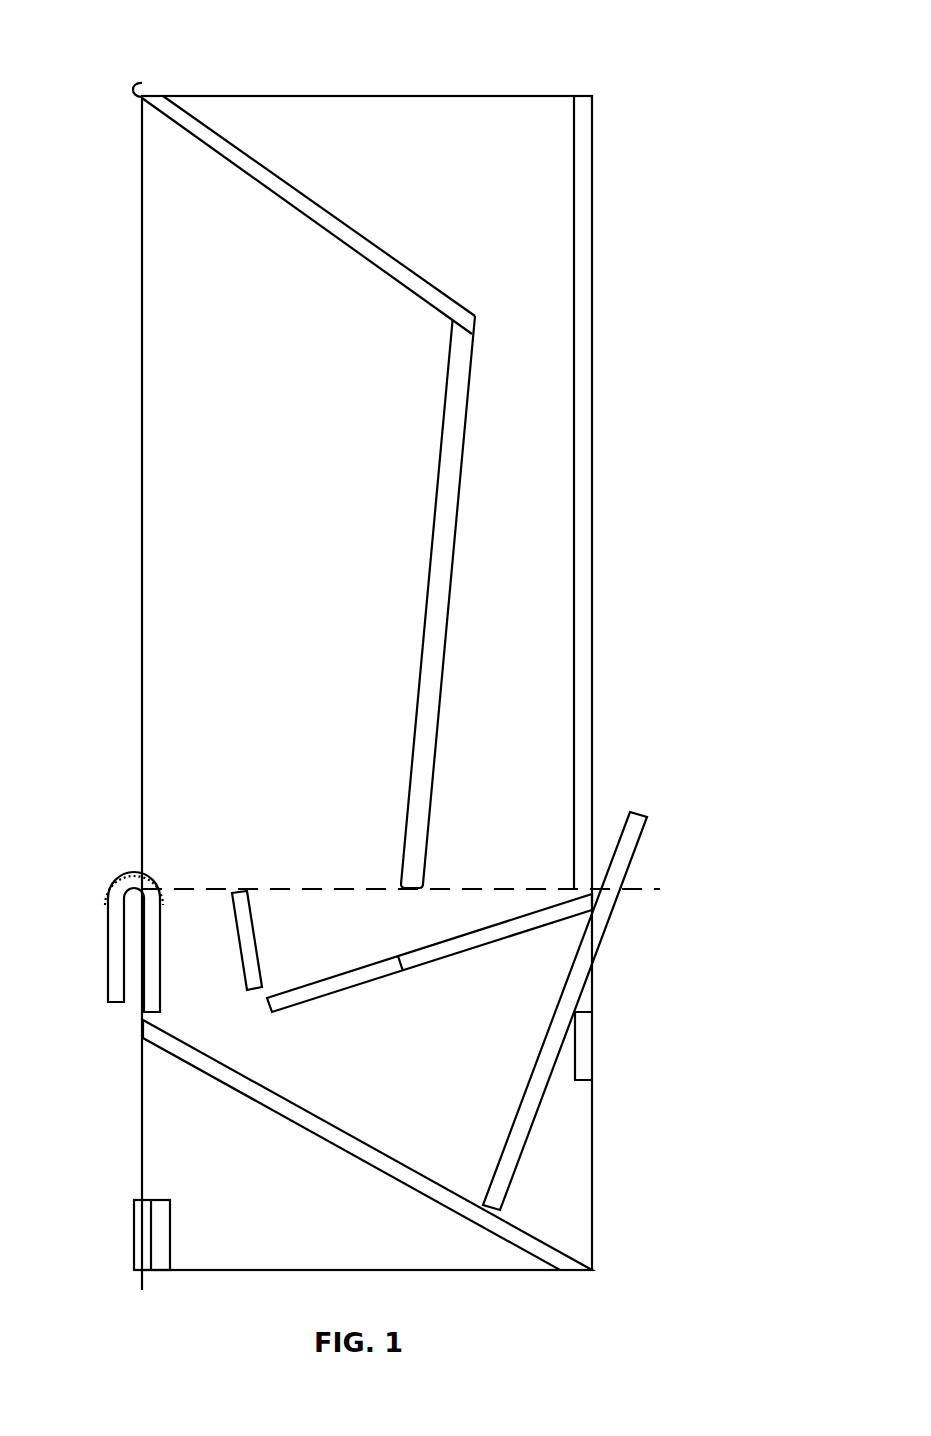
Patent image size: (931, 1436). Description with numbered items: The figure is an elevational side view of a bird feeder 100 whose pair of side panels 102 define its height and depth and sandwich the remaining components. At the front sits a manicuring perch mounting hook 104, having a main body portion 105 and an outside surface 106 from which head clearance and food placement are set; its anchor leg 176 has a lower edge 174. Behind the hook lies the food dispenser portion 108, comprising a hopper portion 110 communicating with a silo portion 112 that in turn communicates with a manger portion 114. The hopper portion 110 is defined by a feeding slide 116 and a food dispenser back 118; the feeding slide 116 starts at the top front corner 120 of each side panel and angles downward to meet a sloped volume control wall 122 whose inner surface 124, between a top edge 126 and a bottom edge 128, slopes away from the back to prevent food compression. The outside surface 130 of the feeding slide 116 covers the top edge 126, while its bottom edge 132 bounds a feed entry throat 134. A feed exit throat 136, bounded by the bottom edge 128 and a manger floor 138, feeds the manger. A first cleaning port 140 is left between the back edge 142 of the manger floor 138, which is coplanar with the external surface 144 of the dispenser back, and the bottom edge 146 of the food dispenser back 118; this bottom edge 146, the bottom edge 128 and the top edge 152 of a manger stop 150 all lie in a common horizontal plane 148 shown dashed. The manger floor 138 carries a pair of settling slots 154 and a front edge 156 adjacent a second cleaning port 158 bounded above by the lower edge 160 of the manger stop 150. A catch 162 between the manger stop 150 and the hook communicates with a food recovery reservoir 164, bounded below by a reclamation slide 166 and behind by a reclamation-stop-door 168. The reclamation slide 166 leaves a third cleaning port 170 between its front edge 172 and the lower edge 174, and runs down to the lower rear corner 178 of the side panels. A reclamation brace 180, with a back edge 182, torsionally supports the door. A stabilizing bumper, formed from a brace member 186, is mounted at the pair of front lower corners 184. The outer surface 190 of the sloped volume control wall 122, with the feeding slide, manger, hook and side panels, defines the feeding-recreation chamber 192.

The feeder 100 is at (250, 56).
The pair of side panels 102 is at (160, 218).
The manicuring perch mounting hook 104 is at (86, 890).
The main body portion 105 is at (112, 910).
The outside surface 106 is at (130, 870).
The food dispenser portion 108 is at (468, 88).
The hopper portion 110 is at (398, 158).
The silo portion 112 is at (532, 540).
The manger portion 114 is at (300, 870).
The feeding slide 116 is at (292, 200).
The food dispenser back 118 is at (583, 292).
The top front corner 120 is at (157, 80).
The sloped volume control wall 122 is at (446, 502).
The inner surface 124 is at (448, 596).
The top edge 126 is at (462, 328).
The bottom edge 128 is at (403, 893).
The outside surface 130 is at (372, 262).
The bottom edge 132 is at (480, 325).
The feed entry throat 134 is at (531, 305).
The feed exit throat 136 is at (432, 916).
The manger floor 138 is at (458, 952).
The first cleaning port 140 is at (560, 900).
The back edge 142 is at (592, 912).
The external surface 144 is at (592, 718).
The bottom edge 146 is at (591, 886).
The common horizontal plane 148 is at (330, 888).
The manger stop 150 is at (240, 892).
The top edge 152 is at (234, 890).
The pair of settling slots 154 is at (322, 965).
The front edge 156 is at (268, 1012).
The second cleaning port 158 is at (278, 988).
The lower edge 160 is at (250, 994).
The catch 162 is at (190, 888).
The food recovery reservoir 164 is at (470, 1102).
The reclamation slide 166 is at (378, 1158).
The reclamation-stop-door 168 is at (542, 1098).
The third cleaning port 170 is at (175, 1025).
The front edge 172 is at (143, 1030).
The lower edge 174 is at (143, 1020).
The anchor leg 176 is at (150, 992).
The lower rear corner 178 is at (590, 1272).
The reclamation brace 180 is at (588, 1018).
The back edge 182 is at (594, 1050).
The pair of front lower corners 184 is at (141, 1272).
The brace member 186 is at (137, 1232).
The outer surface 190 is at (428, 640).
The feeding-recreation chamber 192 is at (132, 493).